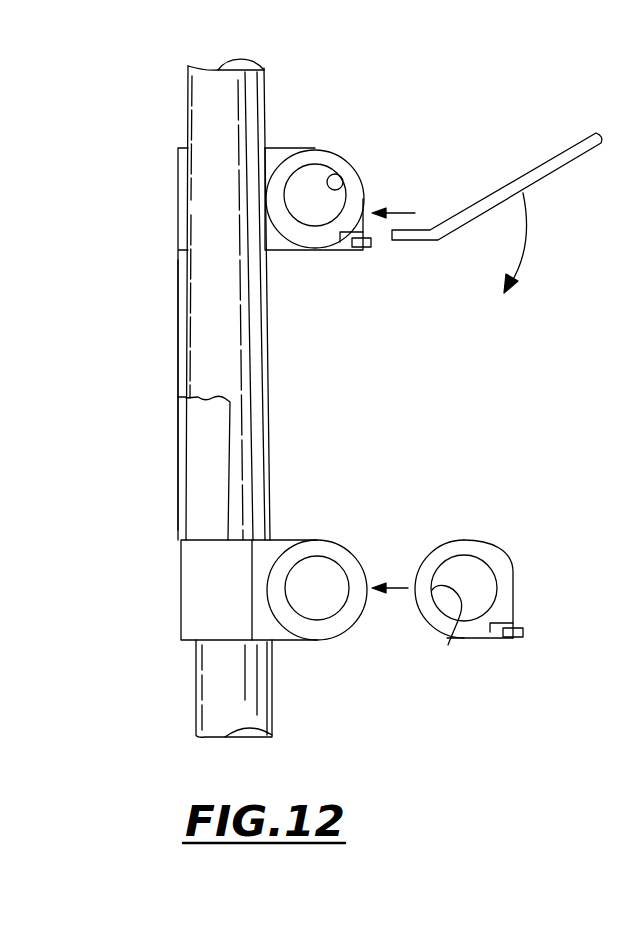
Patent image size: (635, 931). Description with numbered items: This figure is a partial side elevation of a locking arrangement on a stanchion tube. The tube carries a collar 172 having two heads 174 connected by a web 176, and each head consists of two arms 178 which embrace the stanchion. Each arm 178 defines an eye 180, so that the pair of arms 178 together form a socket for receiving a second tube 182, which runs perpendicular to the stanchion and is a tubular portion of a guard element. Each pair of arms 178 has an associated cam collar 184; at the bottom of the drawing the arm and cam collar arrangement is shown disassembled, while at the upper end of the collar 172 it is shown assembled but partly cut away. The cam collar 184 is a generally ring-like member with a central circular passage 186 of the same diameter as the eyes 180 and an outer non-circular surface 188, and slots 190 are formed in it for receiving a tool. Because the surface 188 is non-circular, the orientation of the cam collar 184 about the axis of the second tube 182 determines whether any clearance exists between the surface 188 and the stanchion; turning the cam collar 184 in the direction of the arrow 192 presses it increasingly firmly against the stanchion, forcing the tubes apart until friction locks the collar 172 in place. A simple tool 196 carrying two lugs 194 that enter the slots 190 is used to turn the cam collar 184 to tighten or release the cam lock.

The collar 172 is at (165, 317).
The head 174 is at (182, 203).
The web 176 is at (183, 378).
The arm 178 is at (272, 152).
The eye 180 is at (308, 237).
The second tube 182 is at (341, 184).
The cam collar 184 is at (286, 225).
The central circular passage 186 is at (448, 645).
The outer non-circular surface 188 is at (452, 547).
The slot 190 is at (362, 248).
The arrow 192 is at (533, 240).
The lug 194 is at (413, 230).
The tool 196 is at (523, 178).